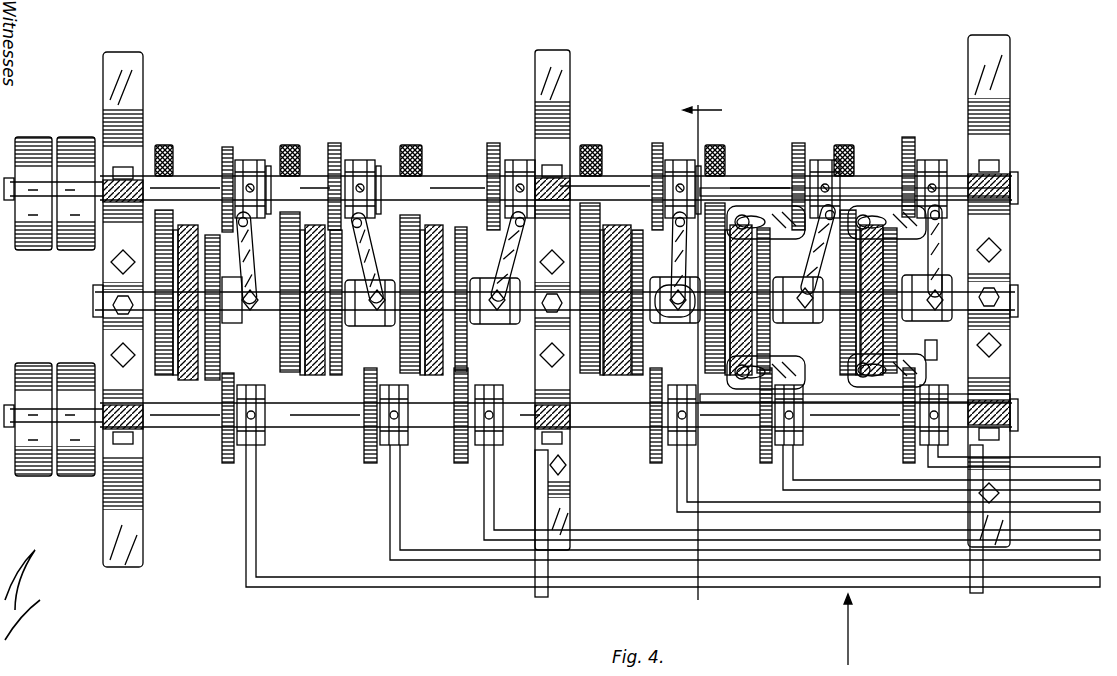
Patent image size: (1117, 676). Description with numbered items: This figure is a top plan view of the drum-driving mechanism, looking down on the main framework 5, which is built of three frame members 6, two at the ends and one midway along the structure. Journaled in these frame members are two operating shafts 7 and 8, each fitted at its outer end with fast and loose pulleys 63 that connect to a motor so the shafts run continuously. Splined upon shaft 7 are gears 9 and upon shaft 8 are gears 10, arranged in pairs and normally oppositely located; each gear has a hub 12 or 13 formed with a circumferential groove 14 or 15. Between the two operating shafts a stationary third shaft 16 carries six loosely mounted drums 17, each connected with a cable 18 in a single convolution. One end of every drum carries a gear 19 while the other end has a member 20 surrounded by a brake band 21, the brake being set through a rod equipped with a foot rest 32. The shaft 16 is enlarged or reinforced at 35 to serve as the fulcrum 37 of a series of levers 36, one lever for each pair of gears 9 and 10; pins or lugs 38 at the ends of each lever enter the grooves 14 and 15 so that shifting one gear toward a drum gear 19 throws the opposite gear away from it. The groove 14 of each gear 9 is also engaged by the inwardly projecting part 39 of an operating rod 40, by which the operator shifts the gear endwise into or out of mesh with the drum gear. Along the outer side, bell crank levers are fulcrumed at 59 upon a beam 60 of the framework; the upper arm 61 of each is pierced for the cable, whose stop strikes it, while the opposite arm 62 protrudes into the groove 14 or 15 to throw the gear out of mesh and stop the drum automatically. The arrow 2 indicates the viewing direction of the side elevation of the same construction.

The direction arrow 2 is at (857, 629).
The main framework 5 is at (1022, 347).
The frame member 6 is at (142, 148).
The operating shaft 7 is at (602, 445).
The operating shaft 8 is at (668, 175).
The gear 9 is at (559, 429).
The gear 10 is at (579, 173).
The hub 12 is at (670, 432).
The hub 13 is at (247, 160).
The circumferential groove 14 is at (592, 413).
The circumferential groove 15 is at (268, 165).
The third shaft 16 is at (98, 300).
The drum 17 is at (587, 283).
The cable 18 is at (432, 230).
The gear 19 is at (460, 230).
The member 20 is at (155, 345).
The brake band 21 is at (432, 462).
The foot rest 32 is at (165, 146).
The enlarged portion of shaft 35 is at (670, 317).
The lever 36 is at (722, 188).
The fulcrum 37 is at (952, 248).
The pin or lug 38 is at (722, 186).
The inwardly projecting part 39 is at (260, 517).
The operating rod 40 is at (862, 528).
The fulcrum 59 is at (925, 346).
The beam 60 is at (868, 190).
The upper arm 61 is at (826, 297).
The arm 62 is at (262, 165).
The fast and loose pulleys 63 is at (72, 250).